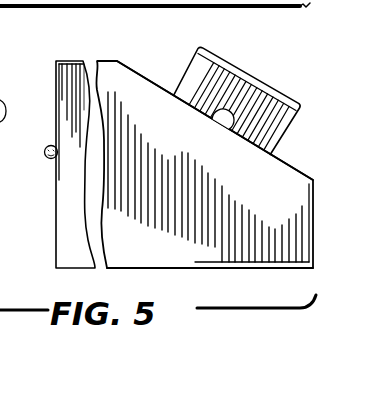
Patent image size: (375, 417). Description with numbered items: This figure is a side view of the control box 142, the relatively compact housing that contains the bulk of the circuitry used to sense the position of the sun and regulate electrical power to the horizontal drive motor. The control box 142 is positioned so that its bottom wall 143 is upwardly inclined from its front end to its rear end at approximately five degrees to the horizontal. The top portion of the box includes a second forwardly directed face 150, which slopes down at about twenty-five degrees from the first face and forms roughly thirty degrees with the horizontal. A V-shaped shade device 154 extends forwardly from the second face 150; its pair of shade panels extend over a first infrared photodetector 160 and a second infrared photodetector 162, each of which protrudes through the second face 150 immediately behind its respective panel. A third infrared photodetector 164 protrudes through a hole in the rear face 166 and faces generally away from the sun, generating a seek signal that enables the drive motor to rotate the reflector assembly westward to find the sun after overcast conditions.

The control box 142 is at (112, 50).
The bottom wall 143 is at (128, 269).
The second forwardly directed face 150 is at (143, 70).
The V-shaped shade device 154 is at (224, 46).
The first infrared photodetector 160 is at (234, 110).
The second infrared photodetector 162 is at (5, 66).
The third infrared photodetector 164 is at (47, 161).
The rear face 166 is at (56, 210).